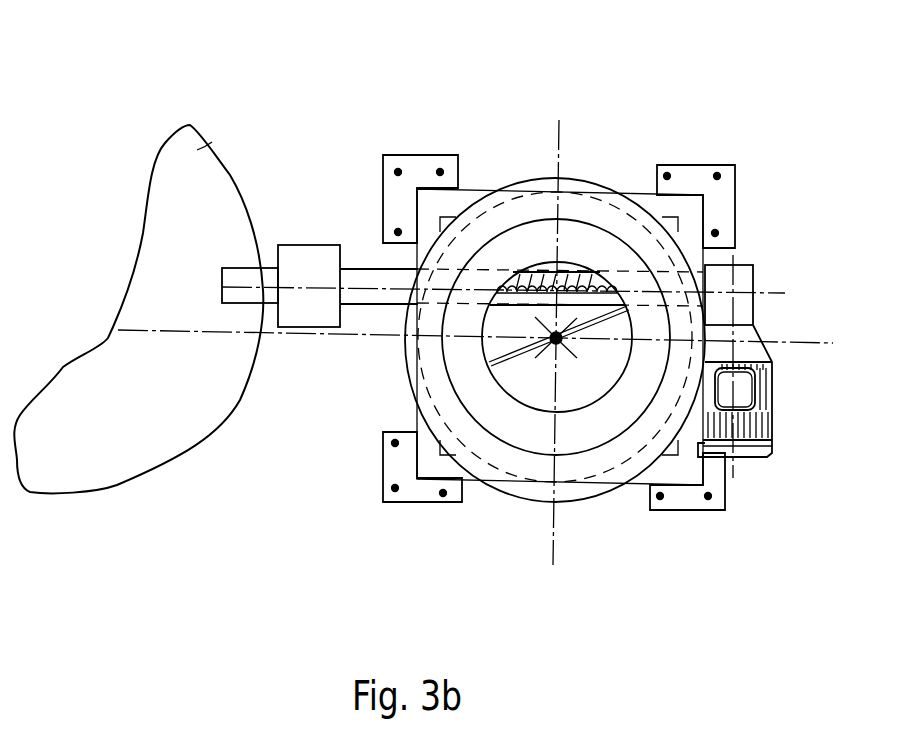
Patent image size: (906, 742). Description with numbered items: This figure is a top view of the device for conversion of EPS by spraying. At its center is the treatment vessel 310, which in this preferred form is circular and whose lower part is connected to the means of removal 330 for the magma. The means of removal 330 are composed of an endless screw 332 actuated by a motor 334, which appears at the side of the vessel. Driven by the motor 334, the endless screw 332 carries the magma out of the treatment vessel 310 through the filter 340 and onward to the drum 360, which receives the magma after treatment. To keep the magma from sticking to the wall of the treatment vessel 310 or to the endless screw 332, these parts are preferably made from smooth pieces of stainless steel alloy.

The treatment vessel 310 is at (650, 192).
The means of removal 330 is at (547, 266).
The endless screw 332 is at (587, 268).
The motor 334 is at (755, 273).
The filter 340 is at (307, 255).
The drum 360 is at (212, 143).